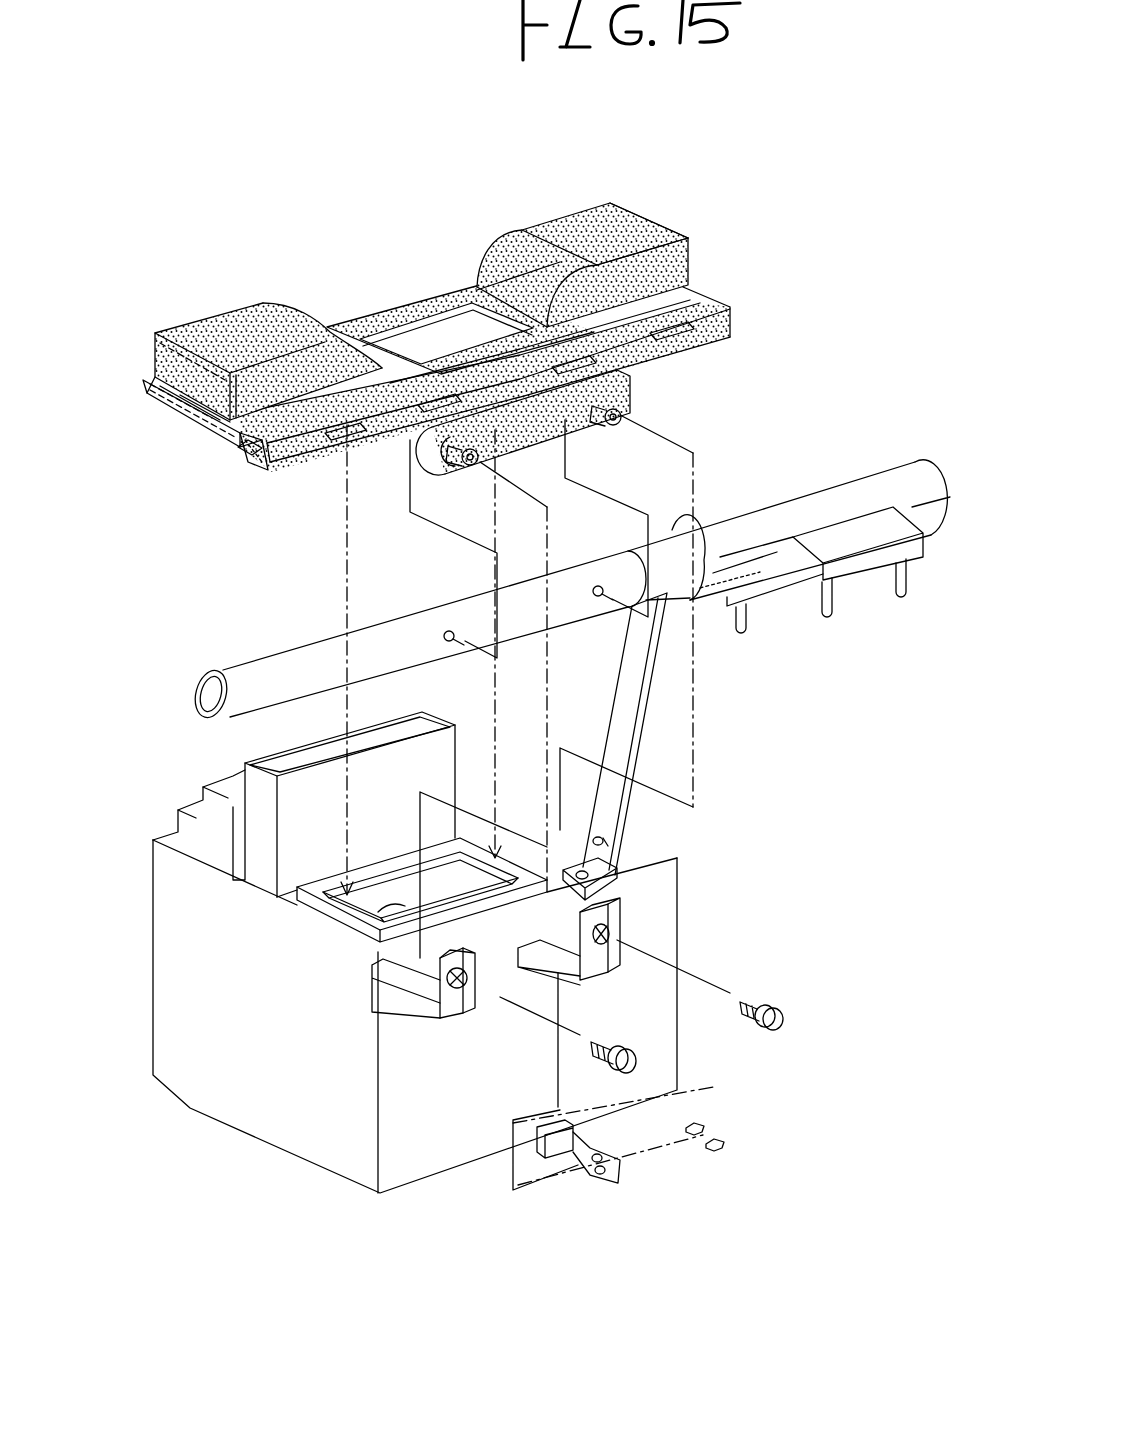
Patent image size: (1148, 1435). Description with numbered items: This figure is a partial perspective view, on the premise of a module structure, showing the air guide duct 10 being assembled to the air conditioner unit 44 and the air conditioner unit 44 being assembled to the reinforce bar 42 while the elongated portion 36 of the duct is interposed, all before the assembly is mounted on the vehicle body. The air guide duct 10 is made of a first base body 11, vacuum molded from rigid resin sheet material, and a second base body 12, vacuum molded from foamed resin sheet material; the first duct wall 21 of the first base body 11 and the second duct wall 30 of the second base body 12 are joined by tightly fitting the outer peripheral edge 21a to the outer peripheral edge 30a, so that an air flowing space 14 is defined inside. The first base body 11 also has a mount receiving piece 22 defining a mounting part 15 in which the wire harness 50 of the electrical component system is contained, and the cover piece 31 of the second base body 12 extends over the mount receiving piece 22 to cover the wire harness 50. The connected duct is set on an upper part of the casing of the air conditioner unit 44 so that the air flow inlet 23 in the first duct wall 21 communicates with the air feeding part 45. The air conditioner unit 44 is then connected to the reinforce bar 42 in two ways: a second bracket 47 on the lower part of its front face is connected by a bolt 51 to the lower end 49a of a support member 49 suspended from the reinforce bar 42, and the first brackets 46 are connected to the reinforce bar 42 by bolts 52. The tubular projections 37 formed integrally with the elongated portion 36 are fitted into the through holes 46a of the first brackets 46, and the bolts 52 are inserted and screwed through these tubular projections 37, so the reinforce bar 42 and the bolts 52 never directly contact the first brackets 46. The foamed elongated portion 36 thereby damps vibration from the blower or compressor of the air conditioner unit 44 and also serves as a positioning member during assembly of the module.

The air guide duct 10 is at (508, 192).
The second base body 12 is at (650, 203).
The second duct wall 30 is at (596, 215).
The outer peripheral edge 30a is at (465, 282).
The cover piece 31 is at (695, 290).
The air flow inlet 23 is at (405, 313).
The wire harness 50 is at (260, 393).
The elongated portion 36 is at (630, 395).
The tubular projections 37 is at (622, 412).
The reinforce bar 42 is at (850, 490).
The first duct wall 21 is at (183, 400).
The outer peripheral edge 21a is at (150, 393).
The air flowing space 14 is at (200, 398).
The first base body 11 is at (197, 428).
The mounting part 15 is at (240, 460).
The mount receiving piece 22 is at (242, 460).
The support member 49 is at (638, 712).
The lower end 49a is at (622, 840).
The first brackets 46 is at (405, 1010).
The through holes 46a is at (455, 1000).
The air feeding part 45 is at (382, 912).
The air conditioner unit 44 is at (273, 1107).
The bolts 52 is at (660, 1058).
The second bracket 47 is at (586, 1145).
The bolt 51 is at (730, 1140).